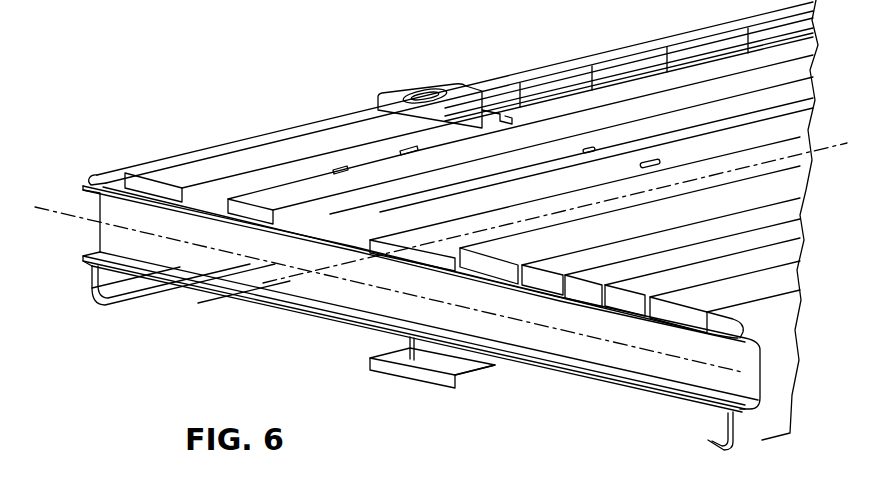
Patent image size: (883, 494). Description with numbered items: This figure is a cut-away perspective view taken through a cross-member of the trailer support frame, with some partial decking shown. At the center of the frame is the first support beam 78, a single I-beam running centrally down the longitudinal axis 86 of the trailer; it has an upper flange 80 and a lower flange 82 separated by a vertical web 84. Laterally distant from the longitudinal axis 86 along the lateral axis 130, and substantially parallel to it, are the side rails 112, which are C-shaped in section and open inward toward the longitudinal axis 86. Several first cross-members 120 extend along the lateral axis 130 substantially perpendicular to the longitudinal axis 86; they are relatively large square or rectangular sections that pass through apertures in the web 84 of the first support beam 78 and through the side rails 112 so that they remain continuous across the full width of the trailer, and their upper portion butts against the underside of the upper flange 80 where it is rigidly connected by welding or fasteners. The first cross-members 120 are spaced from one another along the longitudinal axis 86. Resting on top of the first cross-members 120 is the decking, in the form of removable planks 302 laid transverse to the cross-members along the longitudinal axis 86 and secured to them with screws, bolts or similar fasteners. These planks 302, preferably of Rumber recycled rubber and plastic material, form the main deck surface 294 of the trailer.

The first support beam 78 is at (422, 401).
The upper flange 80 is at (420, 253).
The lower flange 82 is at (475, 387).
The web 84 is at (425, 352).
The longitudinal axis 86 is at (298, 276).
The side rails 112 is at (110, 306).
The first cross-members 120 is at (577, 377).
The lateral axis 130 is at (50, 207).
The main deck surface 294 is at (292, 145).
The planks 302 is at (205, 165).